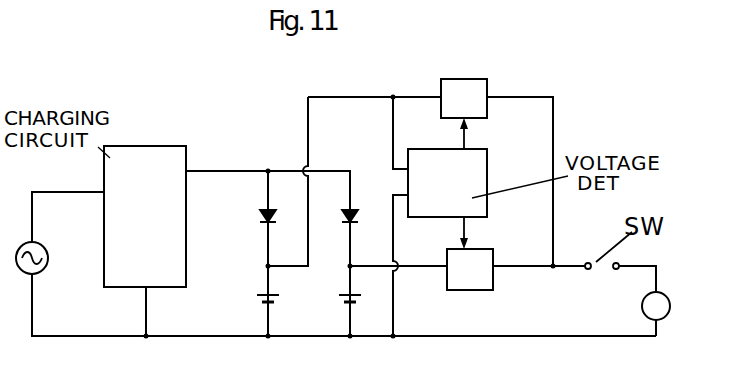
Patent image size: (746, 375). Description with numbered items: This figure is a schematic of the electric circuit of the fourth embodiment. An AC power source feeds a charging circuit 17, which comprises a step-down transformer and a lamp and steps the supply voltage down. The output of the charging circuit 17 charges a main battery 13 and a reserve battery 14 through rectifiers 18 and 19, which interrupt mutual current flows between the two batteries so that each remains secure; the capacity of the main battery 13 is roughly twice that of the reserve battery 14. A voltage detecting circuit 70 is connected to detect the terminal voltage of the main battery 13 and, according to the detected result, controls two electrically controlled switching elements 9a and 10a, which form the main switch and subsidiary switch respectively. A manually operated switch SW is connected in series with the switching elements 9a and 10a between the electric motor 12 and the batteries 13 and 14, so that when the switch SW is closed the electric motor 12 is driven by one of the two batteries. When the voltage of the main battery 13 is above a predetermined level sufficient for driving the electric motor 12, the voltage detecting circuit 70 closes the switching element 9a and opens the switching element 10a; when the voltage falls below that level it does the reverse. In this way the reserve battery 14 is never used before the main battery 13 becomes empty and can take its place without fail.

The charging circuit 17 is at (162, 158).
The rectifier 18 is at (260, 218).
The rectifier 19 is at (353, 208).
The main battery 13 is at (258, 297).
The reserve battery 14 is at (343, 299).
The switching element 9a is at (469, 89).
The voltage detecting circuit 70 is at (477, 182).
The switching element 10a is at (485, 279).
The electric motor 12 is at (661, 295).